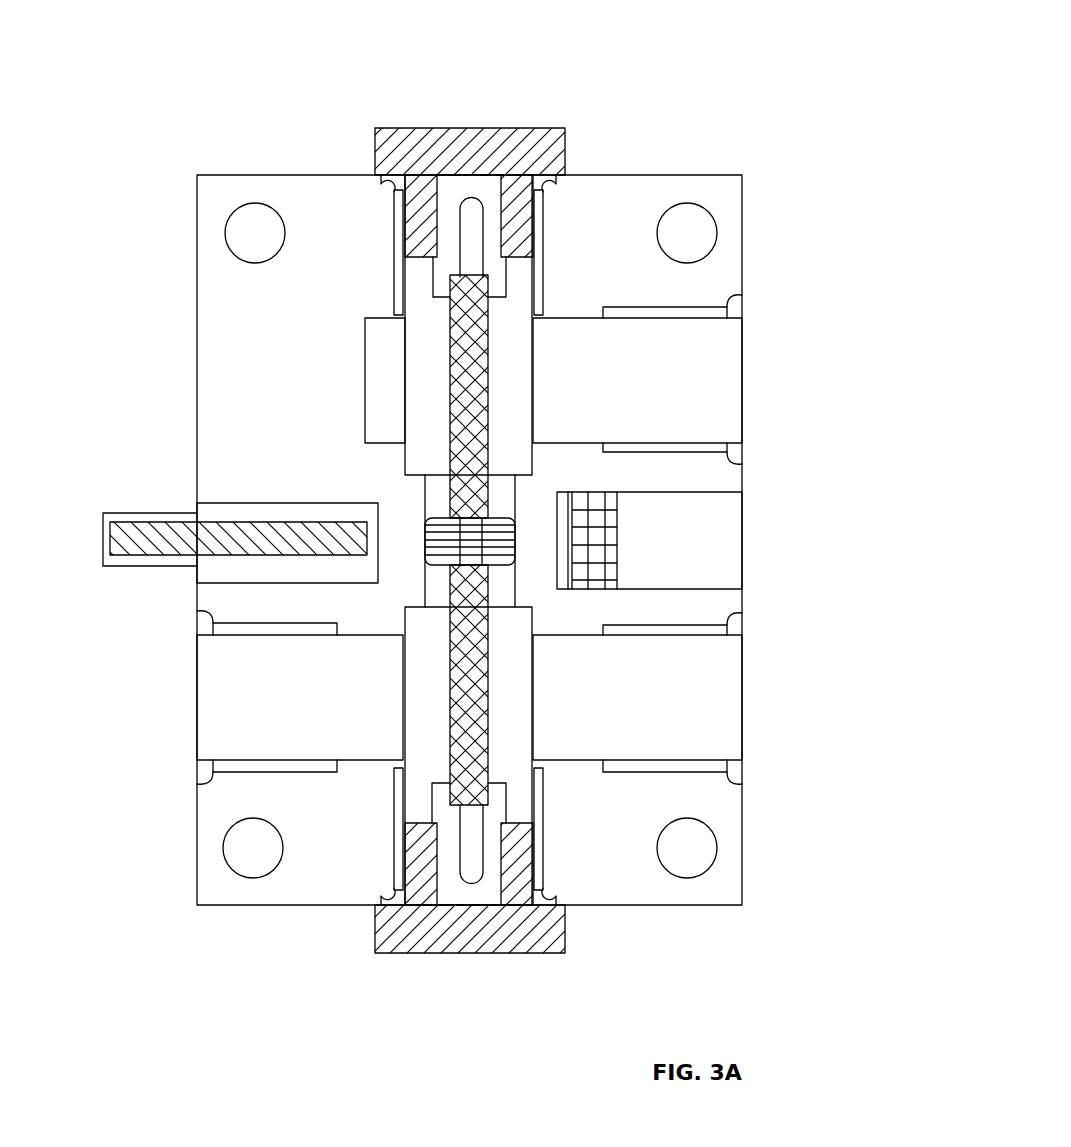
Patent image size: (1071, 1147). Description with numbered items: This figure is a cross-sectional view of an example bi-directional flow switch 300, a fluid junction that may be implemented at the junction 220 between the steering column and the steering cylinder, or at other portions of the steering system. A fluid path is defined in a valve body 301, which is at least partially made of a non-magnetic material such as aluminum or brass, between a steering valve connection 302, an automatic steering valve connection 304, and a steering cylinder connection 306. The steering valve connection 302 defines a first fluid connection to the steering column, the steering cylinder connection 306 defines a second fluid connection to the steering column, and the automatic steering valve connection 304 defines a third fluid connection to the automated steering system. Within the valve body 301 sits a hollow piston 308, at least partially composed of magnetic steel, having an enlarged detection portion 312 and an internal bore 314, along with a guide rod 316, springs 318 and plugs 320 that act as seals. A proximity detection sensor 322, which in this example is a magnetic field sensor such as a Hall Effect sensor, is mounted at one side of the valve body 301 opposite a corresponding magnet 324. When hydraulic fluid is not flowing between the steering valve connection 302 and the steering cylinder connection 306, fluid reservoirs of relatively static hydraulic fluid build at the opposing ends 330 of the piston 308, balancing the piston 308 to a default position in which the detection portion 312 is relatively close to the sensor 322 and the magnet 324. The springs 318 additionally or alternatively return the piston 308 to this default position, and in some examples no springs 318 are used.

The junction 220 is at (797, 37).
The bi-directional flow switch 300 is at (722, 91).
The valve body 301 is at (730, 217).
The steering valve connection 302 is at (743, 352).
The automatic steering valve connection 304 is at (197, 645).
The steering cylinder connection 306 is at (745, 643).
The piston 308 is at (450, 312).
The detection portion 312 is at (425, 520).
The internal bore 314 is at (450, 803).
The guide rod 316 is at (475, 197).
The springs 318 is at (450, 207).
The plugs 320 is at (463, 130).
The proximity detection sensor 322 is at (103, 548).
The magnet 324 is at (617, 515).
The ends of the piston 330 is at (485, 277).